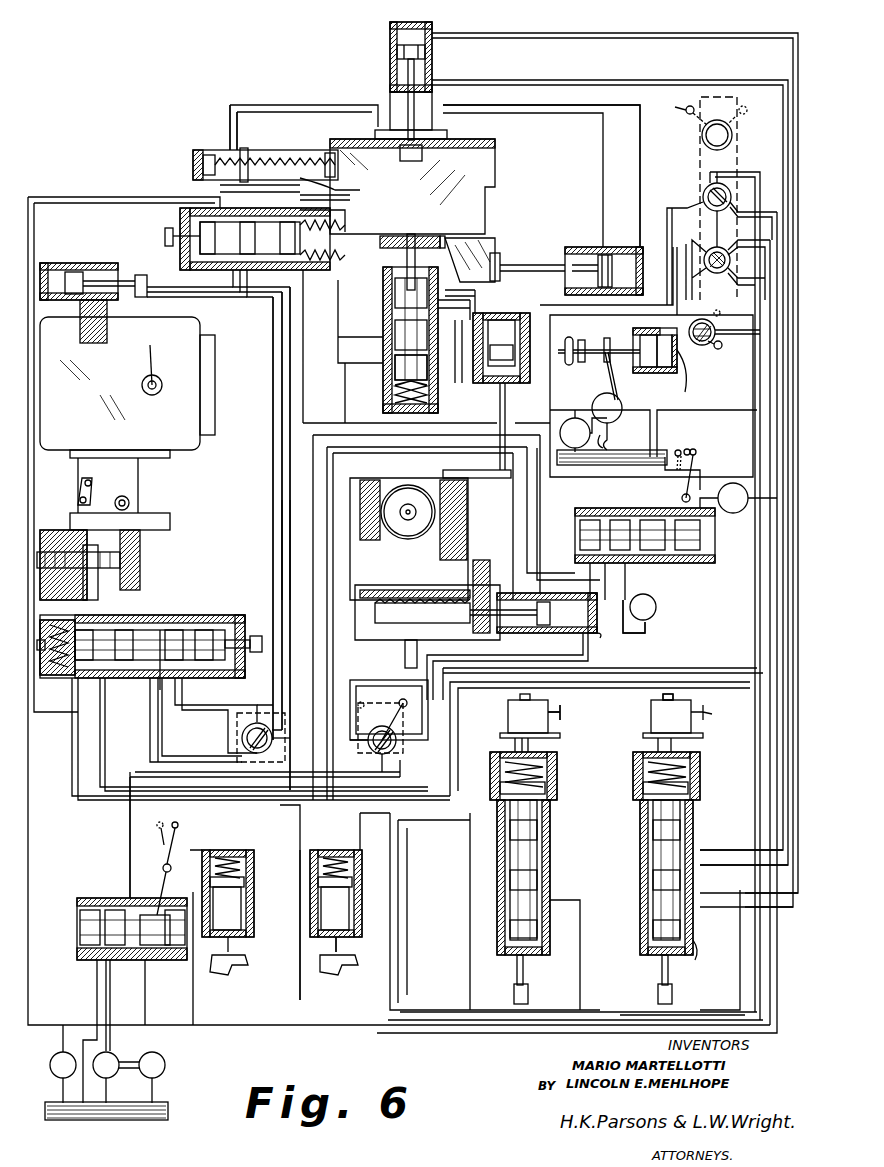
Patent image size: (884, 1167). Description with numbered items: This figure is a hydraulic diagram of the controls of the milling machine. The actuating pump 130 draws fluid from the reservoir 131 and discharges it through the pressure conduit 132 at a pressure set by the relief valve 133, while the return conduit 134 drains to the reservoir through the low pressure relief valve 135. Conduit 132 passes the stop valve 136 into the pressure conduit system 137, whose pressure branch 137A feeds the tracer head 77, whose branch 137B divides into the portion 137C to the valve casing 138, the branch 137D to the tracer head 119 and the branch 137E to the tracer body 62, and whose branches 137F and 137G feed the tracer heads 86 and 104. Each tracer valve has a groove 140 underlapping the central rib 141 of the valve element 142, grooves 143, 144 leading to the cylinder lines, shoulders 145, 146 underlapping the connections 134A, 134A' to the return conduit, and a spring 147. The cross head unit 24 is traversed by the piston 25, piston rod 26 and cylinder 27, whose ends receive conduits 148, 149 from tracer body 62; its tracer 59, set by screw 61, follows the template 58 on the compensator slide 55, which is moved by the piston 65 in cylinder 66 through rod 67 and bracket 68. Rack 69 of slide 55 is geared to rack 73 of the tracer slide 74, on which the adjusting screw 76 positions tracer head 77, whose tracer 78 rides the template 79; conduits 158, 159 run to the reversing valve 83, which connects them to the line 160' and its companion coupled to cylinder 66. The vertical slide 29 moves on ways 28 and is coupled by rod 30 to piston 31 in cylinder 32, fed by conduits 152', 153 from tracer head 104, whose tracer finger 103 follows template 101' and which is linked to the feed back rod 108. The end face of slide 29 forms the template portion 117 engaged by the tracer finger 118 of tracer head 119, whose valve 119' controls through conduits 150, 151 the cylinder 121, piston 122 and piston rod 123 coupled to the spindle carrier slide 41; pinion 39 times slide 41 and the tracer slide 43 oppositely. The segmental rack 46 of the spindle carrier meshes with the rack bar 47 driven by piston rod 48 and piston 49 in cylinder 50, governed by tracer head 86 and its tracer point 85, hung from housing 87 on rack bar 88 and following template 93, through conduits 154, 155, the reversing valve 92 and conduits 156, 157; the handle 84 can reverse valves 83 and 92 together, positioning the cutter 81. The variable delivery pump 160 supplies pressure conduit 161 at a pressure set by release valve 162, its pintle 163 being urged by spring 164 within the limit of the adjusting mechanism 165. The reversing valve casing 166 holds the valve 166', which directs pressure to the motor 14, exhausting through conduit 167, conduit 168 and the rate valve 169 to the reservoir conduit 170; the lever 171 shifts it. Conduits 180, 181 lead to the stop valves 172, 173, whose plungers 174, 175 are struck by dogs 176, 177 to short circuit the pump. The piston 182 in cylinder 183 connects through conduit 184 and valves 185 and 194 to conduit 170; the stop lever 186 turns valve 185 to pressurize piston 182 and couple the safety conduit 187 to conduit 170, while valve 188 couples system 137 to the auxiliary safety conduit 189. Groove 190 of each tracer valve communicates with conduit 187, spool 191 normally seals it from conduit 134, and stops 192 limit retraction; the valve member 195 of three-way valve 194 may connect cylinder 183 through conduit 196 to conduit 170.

The motor 14 is at (656, 608).
The cross head unit 24 is at (495, 248).
The piston 25 is at (605, 255).
The piston rod 26 is at (540, 268).
The cylinder 27 is at (640, 248).
The vertical guides 28 is at (422, 153).
The vertical slide 29 is at (484, 178).
The rod 30 is at (414, 78).
The piston 31 is at (400, 53).
The cylinder 32 is at (432, 26).
The pinion 39 is at (408, 539).
The spindle carrier slide 41 is at (460, 504).
The tracer slide 43 is at (360, 483).
The segmental circular rack 46 is at (470, 585).
The sliding rack bar 47 is at (485, 605).
The piston rod 48 is at (478, 632).
The piston 49 is at (533, 613).
The cylinder 50 is at (608, 646).
The compensator slide 55 is at (195, 441).
The template 58 is at (165, 228).
The tracer 59 is at (170, 240).
The screw 61 is at (325, 158).
The tracer body 62 is at (350, 213).
The piston 65 is at (74, 272).
The cylinder 66 is at (50, 270).
The rod 67 is at (130, 306).
The bracket 68 is at (147, 288).
The rack 69 is at (130, 458).
The rack 73 is at (130, 503).
The tracer slide 74 is at (125, 586).
The adjusting screw 76 is at (68, 538).
The tracer head 77 is at (200, 618).
The tracer 78 is at (218, 618).
The transverse movement control template 79 is at (256, 636).
The cutter 81 is at (405, 656).
The reversing valve 83 is at (240, 738).
The handle 84 is at (395, 688).
The tracer point 85 is at (517, 974).
The tracer head 86 is at (543, 956).
The housing 87 is at (508, 719).
The rack bar 88 is at (530, 697).
The reversing valve 92 is at (372, 752).
The template 93 is at (514, 992).
The template 101' is at (689, 993).
The tracer finger 103 is at (662, 974).
The tracer head 104 is at (713, 959).
The feed back rod 108 is at (660, 697).
The template portion 117 is at (448, 248).
The tracer finger 118 is at (412, 248).
The tracer head 119 is at (370, 345).
The tracer controlled valve 119' is at (377, 373).
The cylinder 121 is at (515, 313).
The piston 122 is at (502, 345).
The piston rod 123 is at (500, 408).
The actuating pump 130 is at (114, 1056).
The reservoir 131 is at (605, 465).
The pressure conduit 132 is at (100, 1006).
The relief valve 133 is at (166, 1060).
The return conduit 134 is at (28, 197).
The connections to reservoir conduit 134A is at (220, 186).
The conduit 134A' is at (357, 198).
The low pressure relief valve 135 is at (52, 1059).
The stop valve 136 is at (77, 899).
The pressure conduit system 137 is at (130, 824).
The pressure branch 137A is at (160, 750).
The branch 137B is at (273, 504).
The branch portion 137C is at (330, 423).
The branch 137D is at (380, 337).
The branch 137E is at (290, 300).
The branch 137F is at (463, 948).
The branch 137G is at (595, 1001).
The valve casing 138 is at (705, 186).
The groove 140 is at (205, 164).
The central rib 141 is at (240, 234).
The valve element 142 is at (195, 211).
The groove 143 is at (240, 166).
The groove 144 is at (340, 181).
The shoulder 145 is at (235, 272).
The shoulder 146 is at (273, 297).
The spring 147 is at (325, 236).
The conduit 148 is at (230, 112).
The conduit 149 is at (265, 124).
The conduit 150 is at (475, 296).
The conduit 151 is at (460, 376).
The conduit 152' is at (744, 870).
The conduit 153 is at (745, 907).
The conduit 154 is at (418, 896).
The conduit 155 is at (432, 834).
The conduit 156 is at (508, 652).
The conduit 157 is at (590, 668).
The conduit 158 is at (250, 700).
The conduit 159 is at (150, 738).
The variable delivery pump 160 is at (625, 420).
The conduit 160' is at (255, 550).
The pressure conduit 161 is at (290, 572).
The release valve 162 is at (578, 465).
The adjustable pintle 163 is at (605, 392).
The spring 164 is at (605, 362).
The pintle adjusting mechanism 165 is at (570, 337).
The reversing valve casing 166 is at (657, 570).
The valve 166' is at (662, 544).
The conduit 167 is at (645, 633).
The conduit 168 is at (680, 490).
The rate valve 169 is at (722, 486).
The reservoir conduit 170 is at (723, 412).
The reversing lever 171 is at (696, 452).
The stop valve 172 is at (242, 850).
The stop valve 173 is at (350, 850).
The dog actuable portion 174 is at (240, 946).
The dog actuable portion 175 is at (330, 946).
The adjustable dog 176 is at (215, 966).
The adjustable dog 177 is at (334, 964).
The conduit 180 is at (570, 551).
The conduit 181 is at (527, 529).
The piston 182 is at (645, 373).
The cylinder 183 is at (698, 373).
The conduit 184 is at (680, 355).
The valve 185 is at (715, 247).
The stop lever 186 is at (686, 110).
The safety system conduit 187 is at (190, 787).
The valve 188 is at (717, 150).
The auxiliary safety conduit system 189 is at (750, 164).
The groove 190 is at (103, 630).
The spool 191 is at (125, 678).
The adjustable valve stops 192 is at (70, 620).
The three-way valve 194 is at (689, 330).
The valve member 195 is at (722, 346).
The conduit 196 is at (750, 336).